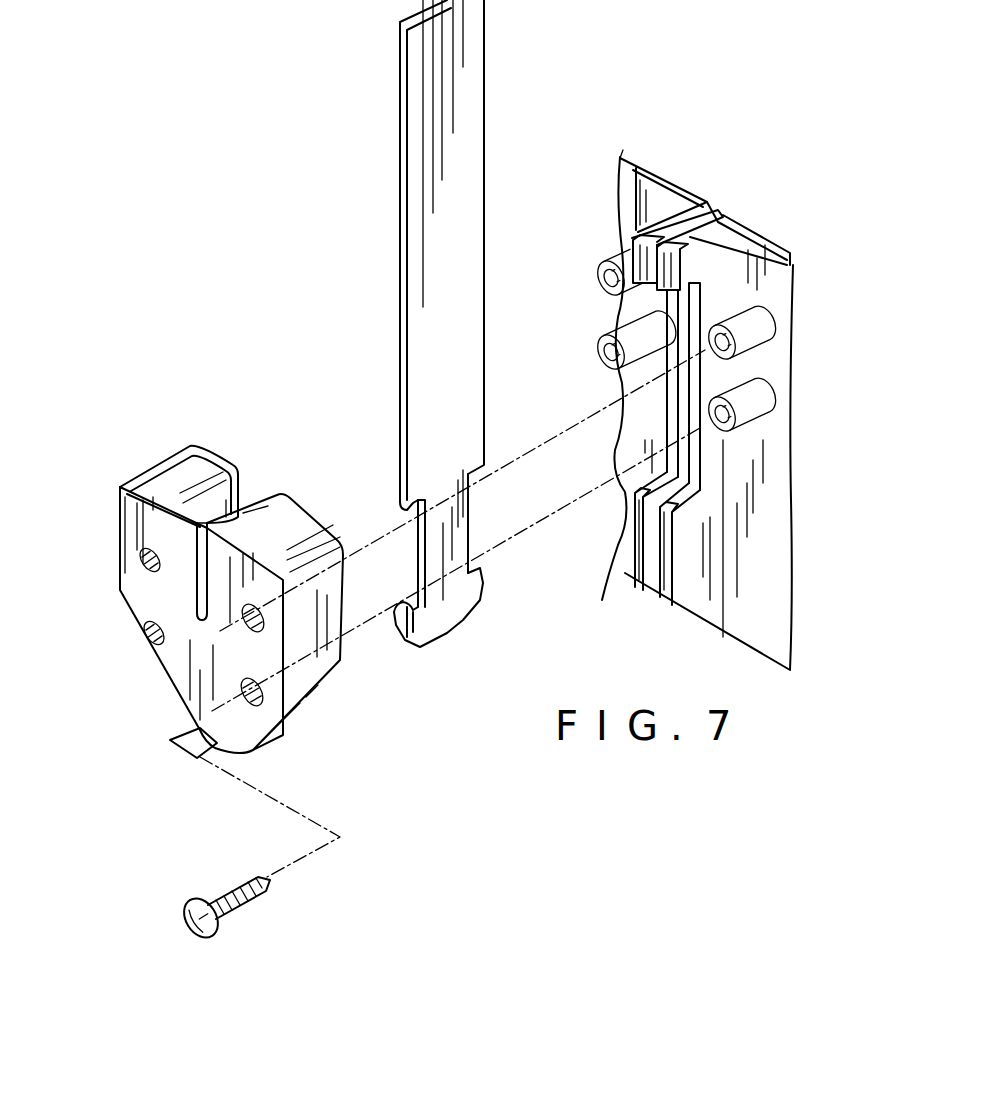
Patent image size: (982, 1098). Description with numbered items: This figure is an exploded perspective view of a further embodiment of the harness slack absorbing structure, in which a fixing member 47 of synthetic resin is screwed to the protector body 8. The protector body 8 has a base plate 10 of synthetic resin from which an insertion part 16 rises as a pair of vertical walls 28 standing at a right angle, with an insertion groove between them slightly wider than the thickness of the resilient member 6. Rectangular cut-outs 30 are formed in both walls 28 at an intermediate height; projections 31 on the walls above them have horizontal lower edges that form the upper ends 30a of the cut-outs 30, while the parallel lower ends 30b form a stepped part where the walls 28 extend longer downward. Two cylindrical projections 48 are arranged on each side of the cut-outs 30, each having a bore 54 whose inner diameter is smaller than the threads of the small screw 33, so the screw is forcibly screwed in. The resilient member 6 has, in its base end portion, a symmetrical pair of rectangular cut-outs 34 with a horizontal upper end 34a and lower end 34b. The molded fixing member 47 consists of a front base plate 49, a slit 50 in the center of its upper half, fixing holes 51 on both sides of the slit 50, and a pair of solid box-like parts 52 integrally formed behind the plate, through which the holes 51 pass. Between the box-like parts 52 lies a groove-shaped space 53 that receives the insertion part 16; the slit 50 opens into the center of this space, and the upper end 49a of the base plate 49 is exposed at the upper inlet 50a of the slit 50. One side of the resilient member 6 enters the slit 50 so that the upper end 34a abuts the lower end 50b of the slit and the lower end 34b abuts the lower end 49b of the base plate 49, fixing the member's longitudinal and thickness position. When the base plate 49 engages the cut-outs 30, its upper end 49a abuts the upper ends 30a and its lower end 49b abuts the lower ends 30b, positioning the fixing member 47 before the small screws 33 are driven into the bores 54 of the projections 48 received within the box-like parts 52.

The resilient member 6 is at (446, 361).
The protector body 8 is at (699, 378).
The base plate 10 is at (785, 240).
The insertion part 16 is at (637, 228).
The vertical walls 28 is at (640, 543).
The rectangular cut-outs 30 is at (613, 466).
The upper ends of the cut-outs 30a is at (772, 268).
The lower ends of the cut-outs 30b is at (630, 545).
The projections 31 is at (723, 215).
The small screw 33 is at (243, 907).
The rectangular cut-outs 34 is at (413, 556).
The upper end of the cut-out 34a is at (405, 507).
The lower end of the cut-out 34b is at (394, 615).
The fixing member 47 is at (221, 581).
The cylindrical projections 48 is at (742, 362).
The front base plate 49 is at (234, 644).
The upper end of the base plate 49a is at (282, 627).
The lower end of the base plate 49b is at (210, 757).
The slit 50 is at (118, 519).
The upper inlet of the slit 50a is at (195, 512).
The lower end of the slit 50b is at (198, 618).
The fixing holes 51 is at (148, 633).
The solid box-like parts 52 is at (288, 518).
The space 53 is at (213, 505).
The bore 54 is at (738, 358).